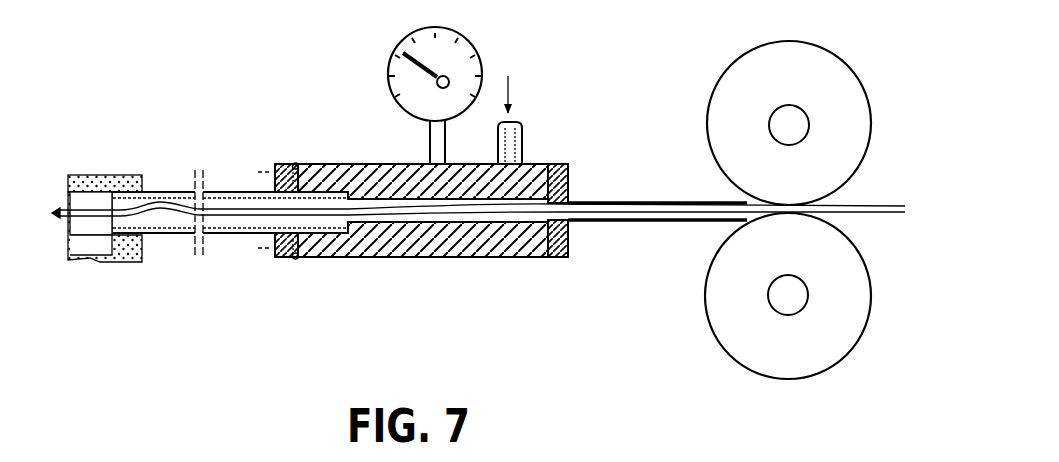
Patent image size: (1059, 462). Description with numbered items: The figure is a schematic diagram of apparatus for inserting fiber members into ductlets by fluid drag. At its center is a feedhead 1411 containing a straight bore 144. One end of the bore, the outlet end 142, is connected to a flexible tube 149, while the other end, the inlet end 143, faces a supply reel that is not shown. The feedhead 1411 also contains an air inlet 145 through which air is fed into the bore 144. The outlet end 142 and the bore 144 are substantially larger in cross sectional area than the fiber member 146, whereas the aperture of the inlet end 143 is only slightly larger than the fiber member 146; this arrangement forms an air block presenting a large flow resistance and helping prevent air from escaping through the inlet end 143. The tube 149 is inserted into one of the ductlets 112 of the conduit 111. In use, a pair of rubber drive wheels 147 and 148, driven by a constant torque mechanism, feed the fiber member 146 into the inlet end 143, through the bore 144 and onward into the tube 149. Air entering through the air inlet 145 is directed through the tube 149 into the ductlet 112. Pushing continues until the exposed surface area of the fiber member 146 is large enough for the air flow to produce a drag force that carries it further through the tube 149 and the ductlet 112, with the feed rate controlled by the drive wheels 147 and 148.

The conduit 111 is at (93, 168).
The ductlet 112 is at (88, 227).
The flexible tube 149 is at (215, 190).
The outlet end 142 is at (275, 168).
The straight bore 144 is at (372, 178).
The feedhead 1411 is at (355, 264).
The inlet end 143 is at (572, 195).
The air inlet 145 is at (510, 135).
The fiber member 146 is at (508, 214).
The rubber drive wheel 147 is at (740, 325).
The rubber drive wheel 148 is at (743, 103).